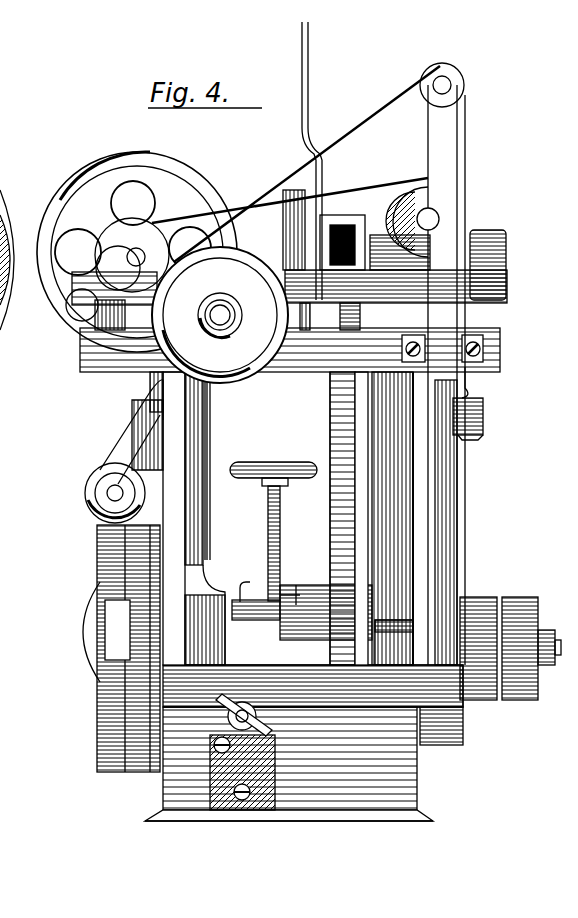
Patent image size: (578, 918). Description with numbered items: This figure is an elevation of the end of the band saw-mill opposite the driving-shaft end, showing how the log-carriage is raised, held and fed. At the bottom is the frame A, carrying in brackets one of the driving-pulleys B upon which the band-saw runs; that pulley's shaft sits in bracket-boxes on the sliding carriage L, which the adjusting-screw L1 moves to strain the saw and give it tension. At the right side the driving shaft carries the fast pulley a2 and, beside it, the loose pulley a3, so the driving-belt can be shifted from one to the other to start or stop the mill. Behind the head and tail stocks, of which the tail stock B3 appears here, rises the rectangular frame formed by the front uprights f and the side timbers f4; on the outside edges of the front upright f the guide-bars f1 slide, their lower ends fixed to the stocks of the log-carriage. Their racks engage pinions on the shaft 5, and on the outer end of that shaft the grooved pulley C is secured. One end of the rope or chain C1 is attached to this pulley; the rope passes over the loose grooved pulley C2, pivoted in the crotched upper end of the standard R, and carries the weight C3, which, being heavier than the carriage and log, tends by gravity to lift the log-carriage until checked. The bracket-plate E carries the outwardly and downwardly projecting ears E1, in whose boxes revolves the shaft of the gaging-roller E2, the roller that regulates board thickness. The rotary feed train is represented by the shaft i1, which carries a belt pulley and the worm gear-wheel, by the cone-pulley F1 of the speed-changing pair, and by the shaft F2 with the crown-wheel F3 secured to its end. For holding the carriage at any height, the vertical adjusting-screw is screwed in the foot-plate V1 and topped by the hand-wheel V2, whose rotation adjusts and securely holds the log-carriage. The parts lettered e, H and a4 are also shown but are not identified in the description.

The frame A is at (304, 703).
The driving-pulleys B is at (105, 545).
The tail stock B3 is at (90, 616).
The grooved pulley C is at (220, 315).
The rope or chain C1 is at (307, 164).
The loose grooved pulley C2 is at (425, 103).
The weight C3 is at (478, 403).
The bracket-plate E is at (408, 190).
The ears E1 is at (125, 440).
The gaging-roller E2 is at (90, 486).
The bearing block e is at (438, 265).
The cone-pulley F1 is at (120, 261).
The shaft F2 is at (120, 268).
The crown-wheel F3 is at (137, 252).
The front uprights f is at (182, 414).
The guide-bars f1 is at (205, 440).
The side timbers f4 is at (500, 317).
The rod H is at (309, 108).
The shaft i1 is at (328, 418).
The sliding carriage L is at (255, 749).
The adjusting-screw L1 is at (255, 708).
The standard R is at (432, 135).
The foot-plate V1 is at (266, 553).
The hand-wheel V2 is at (273, 462).
The pulley a2 is at (478, 702).
The loose pulley a3 is at (520, 702).
The wheel a4 is at (8, 272).
The shaft 5 is at (220, 315).